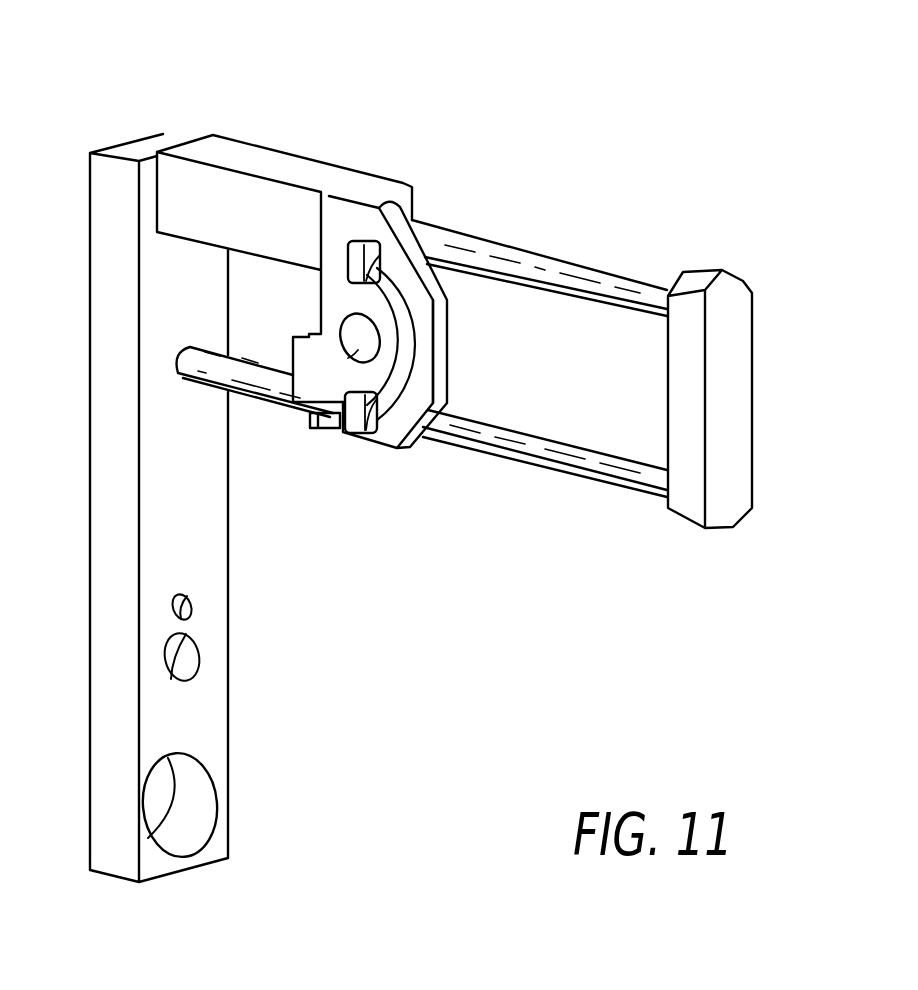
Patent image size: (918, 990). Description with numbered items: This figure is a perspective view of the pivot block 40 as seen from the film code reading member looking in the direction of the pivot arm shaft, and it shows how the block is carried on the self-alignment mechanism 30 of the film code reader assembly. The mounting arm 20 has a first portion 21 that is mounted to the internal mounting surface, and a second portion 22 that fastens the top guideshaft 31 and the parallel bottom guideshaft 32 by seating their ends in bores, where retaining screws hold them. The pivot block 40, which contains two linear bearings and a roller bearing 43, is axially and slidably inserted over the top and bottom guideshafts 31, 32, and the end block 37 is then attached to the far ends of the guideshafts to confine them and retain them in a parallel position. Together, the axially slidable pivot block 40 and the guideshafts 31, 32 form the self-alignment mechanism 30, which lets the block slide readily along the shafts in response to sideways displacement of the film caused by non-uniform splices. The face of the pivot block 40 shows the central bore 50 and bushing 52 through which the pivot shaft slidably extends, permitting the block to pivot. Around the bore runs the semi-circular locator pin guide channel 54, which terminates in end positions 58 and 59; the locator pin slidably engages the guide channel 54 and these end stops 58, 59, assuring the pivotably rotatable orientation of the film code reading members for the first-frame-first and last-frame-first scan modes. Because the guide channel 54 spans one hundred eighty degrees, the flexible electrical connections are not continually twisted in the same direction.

The mounting arm 20 is at (121, 508).
The first portion 21 is at (88, 708).
The second portion 22 is at (90, 258).
The self-alignment mechanism 30 is at (611, 318).
The top guideshaft 31 is at (638, 236).
The bottom guideshaft 32 is at (600, 403).
The end block 37 is at (752, 482).
The pivot block 40 is at (284, 292).
The roller bearing 43 is at (317, 430).
The central bore 50 is at (403, 346).
The bushing 52 is at (358, 350).
The semi-circular locator pin guide channel 54 is at (418, 362).
The end position 58 is at (365, 434).
The end position 59 is at (348, 267).